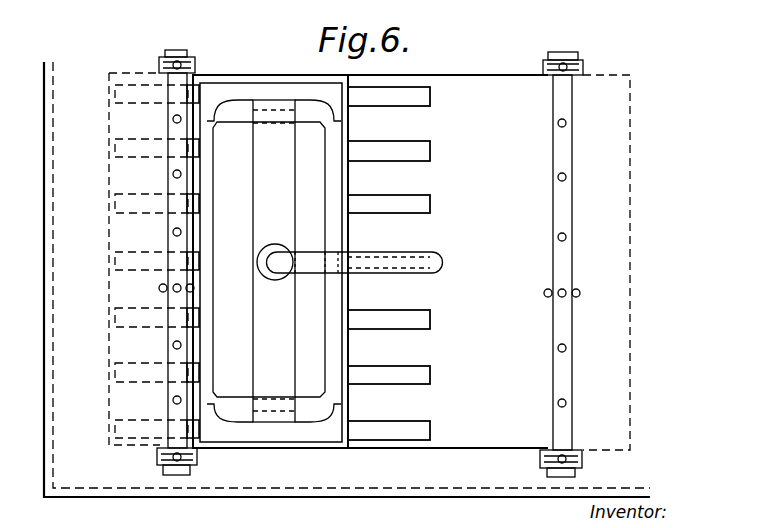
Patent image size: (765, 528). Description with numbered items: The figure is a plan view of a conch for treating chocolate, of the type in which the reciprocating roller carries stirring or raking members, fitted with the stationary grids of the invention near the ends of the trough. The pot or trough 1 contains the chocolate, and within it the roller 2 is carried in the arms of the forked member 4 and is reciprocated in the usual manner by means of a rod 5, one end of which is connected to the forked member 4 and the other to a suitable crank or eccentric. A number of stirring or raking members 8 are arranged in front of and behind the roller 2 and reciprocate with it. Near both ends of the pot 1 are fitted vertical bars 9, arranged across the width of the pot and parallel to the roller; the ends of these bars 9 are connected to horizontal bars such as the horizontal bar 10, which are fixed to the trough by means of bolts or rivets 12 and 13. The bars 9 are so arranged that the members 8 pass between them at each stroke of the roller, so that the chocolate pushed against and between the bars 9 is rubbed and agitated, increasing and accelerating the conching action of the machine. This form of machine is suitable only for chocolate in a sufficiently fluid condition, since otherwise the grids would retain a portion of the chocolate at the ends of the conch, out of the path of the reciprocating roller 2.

The pot or trough 1 is at (369, 261).
The roller 2 is at (269, 259).
The forked member 4 is at (268, 197).
The rod 5 is at (437, 252).
The stirring or raking members 8 is at (120, 149).
The vertical bars 9 is at (172, 345).
The horizontal bar 10 is at (553, 198).
The bolts or rivets 12 is at (192, 58).
The bolts or rivets 13 is at (158, 288).